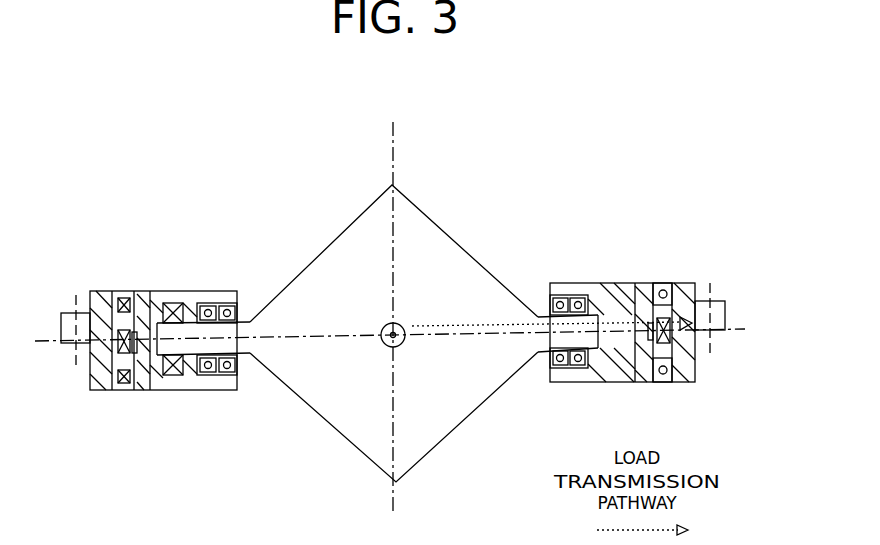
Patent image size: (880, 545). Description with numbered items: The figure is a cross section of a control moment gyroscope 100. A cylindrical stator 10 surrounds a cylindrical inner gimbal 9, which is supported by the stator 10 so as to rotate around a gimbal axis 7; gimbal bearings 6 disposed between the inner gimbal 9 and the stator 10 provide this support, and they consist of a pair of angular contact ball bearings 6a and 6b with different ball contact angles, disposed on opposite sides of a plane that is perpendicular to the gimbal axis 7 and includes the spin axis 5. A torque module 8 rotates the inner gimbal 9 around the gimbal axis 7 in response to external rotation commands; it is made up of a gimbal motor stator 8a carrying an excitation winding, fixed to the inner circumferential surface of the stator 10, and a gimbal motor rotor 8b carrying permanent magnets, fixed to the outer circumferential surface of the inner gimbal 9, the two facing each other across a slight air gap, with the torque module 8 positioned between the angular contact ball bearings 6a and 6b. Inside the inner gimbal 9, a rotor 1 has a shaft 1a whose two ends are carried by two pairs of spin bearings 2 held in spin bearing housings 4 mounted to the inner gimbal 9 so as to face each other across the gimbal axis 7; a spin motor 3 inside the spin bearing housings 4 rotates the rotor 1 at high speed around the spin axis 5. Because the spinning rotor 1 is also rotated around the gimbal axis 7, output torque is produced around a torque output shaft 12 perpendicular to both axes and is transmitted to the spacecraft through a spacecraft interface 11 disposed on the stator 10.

The control moment gyroscope 100 is at (77, 118).
The rotor 1 is at (442, 215).
The shaft 1a is at (222, 353).
The spin bearings 2 is at (228, 296).
The spin motor 3 is at (175, 303).
The spin bearing housings 4 is at (570, 283).
The spin axis 5 is at (747, 325).
The gimbal bearings 6 is at (124, 291).
The angular contact ball bearing 6a is at (658, 283).
The angular contact ball bearing 6b is at (661, 382).
The gimbal axis 7 is at (390, 147).
The torque module 8 is at (102, 412).
The gimbal motor stator 8a is at (118, 356).
The gimbal motor rotor 8b is at (124, 360).
The inner gimbal 9 is at (145, 390).
The stator 10 is at (684, 283).
The spacecraft interface 11 is at (717, 320).
The torque output shaft 12 is at (405, 343).